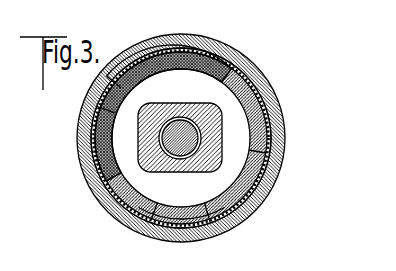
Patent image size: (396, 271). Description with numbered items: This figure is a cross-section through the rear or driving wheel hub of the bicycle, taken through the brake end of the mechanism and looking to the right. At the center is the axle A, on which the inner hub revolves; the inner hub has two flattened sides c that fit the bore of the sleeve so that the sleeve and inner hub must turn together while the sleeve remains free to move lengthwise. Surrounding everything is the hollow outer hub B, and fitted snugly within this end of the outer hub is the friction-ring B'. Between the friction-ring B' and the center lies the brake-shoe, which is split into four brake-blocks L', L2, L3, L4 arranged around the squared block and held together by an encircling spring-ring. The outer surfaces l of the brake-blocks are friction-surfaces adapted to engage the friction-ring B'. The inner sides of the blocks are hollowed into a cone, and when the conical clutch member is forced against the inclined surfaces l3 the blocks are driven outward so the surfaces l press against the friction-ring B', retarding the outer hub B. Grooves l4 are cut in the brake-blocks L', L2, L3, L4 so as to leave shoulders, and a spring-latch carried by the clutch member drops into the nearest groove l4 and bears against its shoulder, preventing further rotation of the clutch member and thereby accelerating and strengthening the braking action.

The hollow outer hub B is at (190, 138).
The friction-ring B' is at (202, 138).
The outer surfaces of the brake-blocks l is at (143, 222).
The brake-block L2 is at (263, 143).
The brake-block L3 is at (203, 235).
The brake-block L4 is at (104, 162).
The brake-block L' is at (169, 41).
The grooves l4 is at (134, 90).
The inclined surfaces l3 is at (152, 210).
The axle A is at (150, 135).
The flattened sides c is at (184, 104).